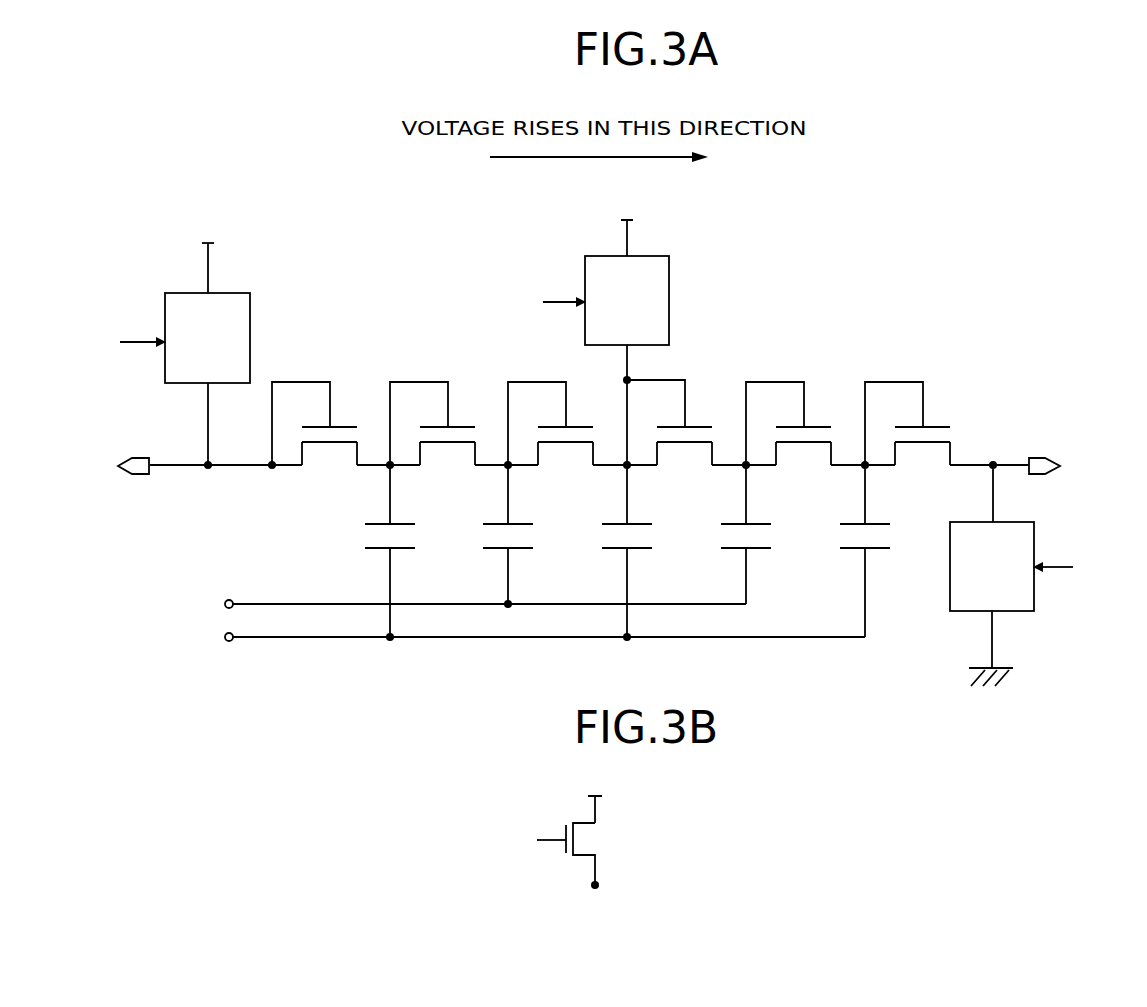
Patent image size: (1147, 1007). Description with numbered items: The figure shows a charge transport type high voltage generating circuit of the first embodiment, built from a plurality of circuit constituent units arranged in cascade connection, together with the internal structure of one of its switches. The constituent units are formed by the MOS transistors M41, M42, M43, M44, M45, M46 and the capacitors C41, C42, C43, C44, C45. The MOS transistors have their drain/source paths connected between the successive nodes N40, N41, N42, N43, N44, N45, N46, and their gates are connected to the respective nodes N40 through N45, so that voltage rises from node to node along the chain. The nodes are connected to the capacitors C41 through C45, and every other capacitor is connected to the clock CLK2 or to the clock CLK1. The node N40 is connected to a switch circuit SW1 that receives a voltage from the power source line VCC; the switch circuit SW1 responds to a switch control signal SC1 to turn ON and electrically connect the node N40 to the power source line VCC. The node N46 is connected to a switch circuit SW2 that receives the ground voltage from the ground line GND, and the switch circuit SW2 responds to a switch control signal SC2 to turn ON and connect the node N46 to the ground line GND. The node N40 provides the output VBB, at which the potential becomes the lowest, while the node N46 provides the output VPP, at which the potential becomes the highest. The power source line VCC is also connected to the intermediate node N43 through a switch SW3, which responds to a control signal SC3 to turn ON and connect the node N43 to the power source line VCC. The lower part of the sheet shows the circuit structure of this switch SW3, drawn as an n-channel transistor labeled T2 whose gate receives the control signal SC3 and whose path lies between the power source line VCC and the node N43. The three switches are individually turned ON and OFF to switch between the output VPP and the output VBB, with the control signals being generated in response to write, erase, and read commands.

In FIG. 3A, the switch circuit SW1 is at (207, 354).
In FIG. 3A, the switch circuit SW2 is at (992, 566).
In FIG. 3A, the switch SW3 is at (627, 360).
In FIG. 3A, the MOS transistor M41 is at (312, 412).
In FIG. 3A, the MOS transistor M42 is at (432, 410).
In FIG. 3A, the MOS transistor M43 is at (550, 410).
In FIG. 3A, the MOS transistor M44 is at (667, 410).
In FIG. 3A, the MOS transistor M45 is at (788, 410).
In FIG. 3A, the MOS transistor M46 is at (907, 410).
In FIG. 3A, the capacitor C41 is at (374, 553).
In FIG. 3A, the capacitor C42 is at (492, 536).
In FIG. 3A, the capacitor C43 is at (611, 553).
In FIG. 3A, the capacitor C44 is at (730, 534).
In FIG. 3A, the capacitor C45 is at (849, 551).
In FIG. 3A, the node N40 is at (212, 484).
In FIG. 3A, the node N41 is at (363, 478).
In FIG. 3A, the node N42 is at (482, 478).
In FIG. 3A, the node N43 is at (600, 478).
In FIG. 3B, the node N43 is at (620, 888).
In FIG. 3A, the node N44 is at (719, 478).
In FIG. 3A, the node N45 is at (838, 478).
In FIG. 3A, the node N46 is at (993, 452).
In FIG. 3A, the clock CLK1 is at (473, 588).
In FIG. 3A, the clock CLK2 is at (532, 655).
In FIG. 3A, the switch control signal SC1 is at (116, 342).
In FIG. 3A, the switch control signal SC2 is at (1077, 567).
In FIG. 3A, the control signal SC3 is at (540, 302).
In FIG. 3B, the control signal SC3 is at (524, 840).
In FIG. 3A, the power source line VCC is at (417, 222).
In FIG. 3B, the power source line VCC is at (593, 795).
In FIG. 3A, the output VBB is at (122, 449).
In FIG. 3A, the output VPP is at (1058, 452).
In FIG. 3A, the ground line GND is at (986, 692).
In FIG. 3B, the N-channel transistor T2 is at (585, 843).